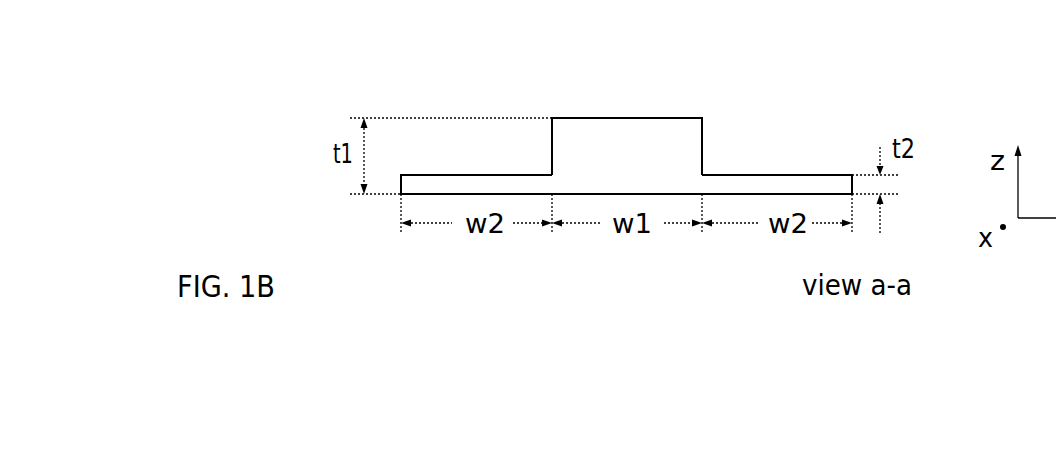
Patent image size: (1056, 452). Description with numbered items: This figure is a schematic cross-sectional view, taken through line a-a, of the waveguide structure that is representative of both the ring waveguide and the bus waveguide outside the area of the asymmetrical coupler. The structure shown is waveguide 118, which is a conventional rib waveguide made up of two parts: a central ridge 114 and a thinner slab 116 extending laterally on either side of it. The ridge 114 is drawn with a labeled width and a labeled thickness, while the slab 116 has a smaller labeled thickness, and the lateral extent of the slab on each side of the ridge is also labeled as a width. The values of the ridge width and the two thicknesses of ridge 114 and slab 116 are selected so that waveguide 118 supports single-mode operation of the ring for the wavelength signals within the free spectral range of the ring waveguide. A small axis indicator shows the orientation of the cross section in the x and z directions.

The waveguide 118 is at (493, 68).
The ridge 114 is at (683, 118).
The slab 116 is at (806, 129).